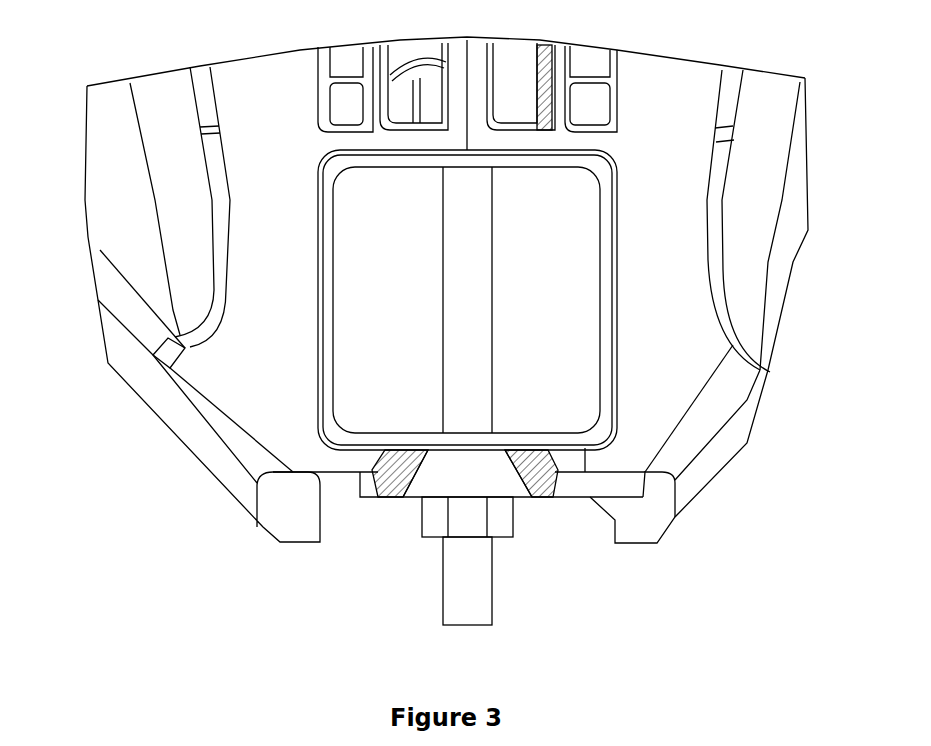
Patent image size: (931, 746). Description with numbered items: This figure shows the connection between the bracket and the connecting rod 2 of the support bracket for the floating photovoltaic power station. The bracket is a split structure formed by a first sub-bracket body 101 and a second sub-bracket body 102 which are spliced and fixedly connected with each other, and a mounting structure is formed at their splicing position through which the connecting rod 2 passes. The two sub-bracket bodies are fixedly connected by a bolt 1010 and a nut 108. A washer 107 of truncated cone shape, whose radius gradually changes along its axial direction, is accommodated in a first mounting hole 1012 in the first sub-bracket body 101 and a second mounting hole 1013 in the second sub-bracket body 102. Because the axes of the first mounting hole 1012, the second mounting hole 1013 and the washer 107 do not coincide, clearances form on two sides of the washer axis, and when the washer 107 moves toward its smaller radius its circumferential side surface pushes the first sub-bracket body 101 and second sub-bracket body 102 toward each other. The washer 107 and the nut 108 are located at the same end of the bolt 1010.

The first sub-bracket body 101 is at (295, 98).
The second sub-bracket body 102 is at (557, 82).
The bolt 1010 is at (468, 310).
The connecting rod 2 is at (542, 378).
The first mounting hole 1012 is at (420, 459).
The second mounting hole 1013 is at (585, 458).
The washer 107 is at (443, 477).
The nut 108 is at (497, 527).